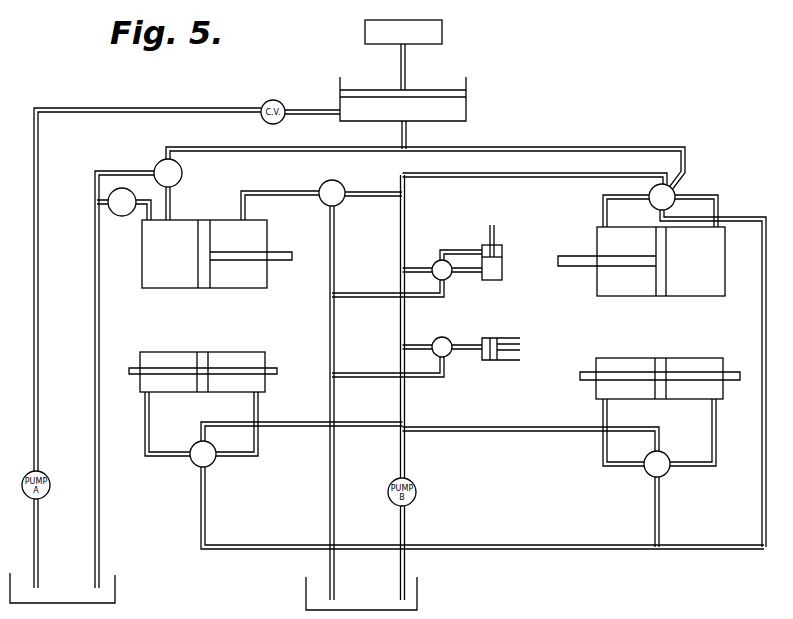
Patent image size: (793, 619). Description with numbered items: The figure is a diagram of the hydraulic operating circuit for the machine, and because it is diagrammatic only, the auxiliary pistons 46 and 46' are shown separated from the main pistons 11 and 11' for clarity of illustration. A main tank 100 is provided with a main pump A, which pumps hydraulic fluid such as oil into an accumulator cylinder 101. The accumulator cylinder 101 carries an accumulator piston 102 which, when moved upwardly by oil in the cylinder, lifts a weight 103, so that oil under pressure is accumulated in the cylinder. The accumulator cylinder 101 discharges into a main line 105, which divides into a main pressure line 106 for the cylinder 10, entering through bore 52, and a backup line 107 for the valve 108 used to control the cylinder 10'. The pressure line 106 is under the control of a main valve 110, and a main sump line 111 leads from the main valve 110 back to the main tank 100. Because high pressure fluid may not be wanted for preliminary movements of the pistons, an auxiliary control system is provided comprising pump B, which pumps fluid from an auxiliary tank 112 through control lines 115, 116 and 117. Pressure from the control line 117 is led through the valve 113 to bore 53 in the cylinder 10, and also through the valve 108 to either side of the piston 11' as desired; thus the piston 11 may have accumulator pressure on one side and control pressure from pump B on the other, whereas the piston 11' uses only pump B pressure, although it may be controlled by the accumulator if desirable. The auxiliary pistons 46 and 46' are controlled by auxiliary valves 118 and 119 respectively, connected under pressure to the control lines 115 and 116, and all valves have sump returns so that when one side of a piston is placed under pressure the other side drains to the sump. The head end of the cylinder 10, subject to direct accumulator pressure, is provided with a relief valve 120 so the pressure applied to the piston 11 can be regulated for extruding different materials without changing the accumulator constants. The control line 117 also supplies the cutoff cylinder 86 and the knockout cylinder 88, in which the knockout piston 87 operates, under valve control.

The main tank 100 is at (117, 600).
The auxiliary tank 112 is at (418, 604).
The weight 103 is at (442, 36).
The accumulator cylinder 101 is at (462, 113).
The accumulator piston 102 is at (430, 92).
The main line 105 is at (407, 135).
The main pressure line 106 is at (260, 147).
The backup line 107 is at (568, 147).
The valve 108 is at (678, 190).
The main valve 110 is at (182, 171).
The main sump line 111 is at (136, 150).
The valve 113 is at (340, 182).
The control line 115 is at (272, 426).
The control line 116 is at (490, 430).
The control line 117 is at (404, 232).
The auxiliary valve 118 is at (190, 466).
The auxiliary valve 119 is at (668, 477).
The relief valve 120 is at (108, 200).
The cylinder 10 is at (217, 242).
The cylinder 10' is at (641, 247).
The piston 11 is at (205, 306).
The piston 11' is at (660, 313).
The auxiliary piston 46 is at (213, 354).
The auxiliary piston 46' is at (677, 361).
The bore 52 is at (172, 196).
The bore 53 is at (230, 209).
The hydraulic cylinder system 86 is at (502, 252).
The knockout piston 87 is at (522, 348).
The knockout cylinder 88 is at (488, 340).